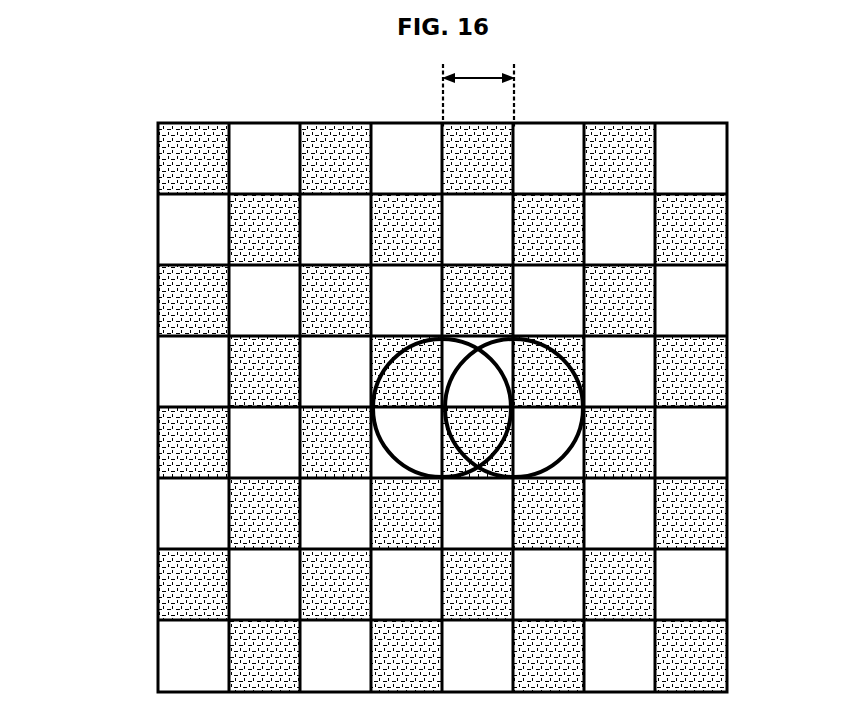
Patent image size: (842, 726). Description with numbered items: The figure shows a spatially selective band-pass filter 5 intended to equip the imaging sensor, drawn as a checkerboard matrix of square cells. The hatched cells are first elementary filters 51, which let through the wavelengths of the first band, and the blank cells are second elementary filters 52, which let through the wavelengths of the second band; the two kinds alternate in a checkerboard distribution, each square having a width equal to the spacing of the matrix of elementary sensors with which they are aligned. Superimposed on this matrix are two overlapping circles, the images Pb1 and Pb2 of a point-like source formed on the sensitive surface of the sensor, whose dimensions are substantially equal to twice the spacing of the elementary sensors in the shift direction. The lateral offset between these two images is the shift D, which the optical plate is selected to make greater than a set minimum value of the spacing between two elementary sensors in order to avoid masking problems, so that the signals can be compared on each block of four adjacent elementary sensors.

The spatially selective band-pass filter 5 is at (54, 329).
The first elementary filter 51 is at (728, 231).
The second elementary filter 52 is at (728, 299).
The image of a point-like source Pb1 is at (376, 451).
The image of a point-like source Pb2 is at (578, 452).
The shift D is at (478, 91).